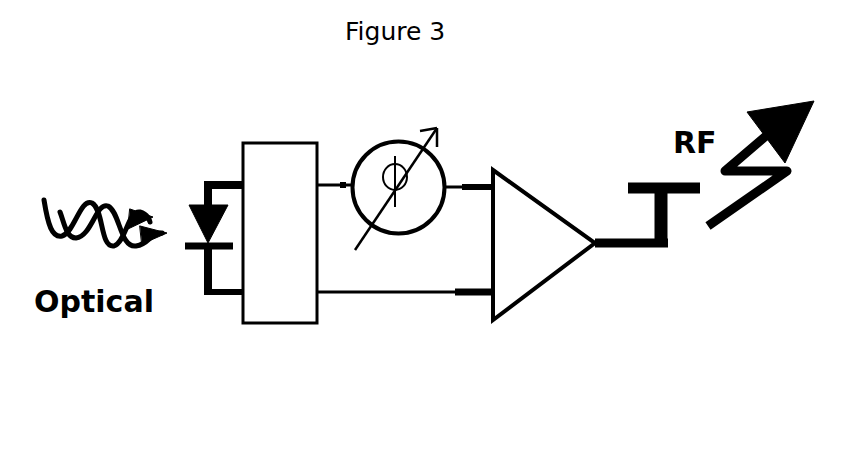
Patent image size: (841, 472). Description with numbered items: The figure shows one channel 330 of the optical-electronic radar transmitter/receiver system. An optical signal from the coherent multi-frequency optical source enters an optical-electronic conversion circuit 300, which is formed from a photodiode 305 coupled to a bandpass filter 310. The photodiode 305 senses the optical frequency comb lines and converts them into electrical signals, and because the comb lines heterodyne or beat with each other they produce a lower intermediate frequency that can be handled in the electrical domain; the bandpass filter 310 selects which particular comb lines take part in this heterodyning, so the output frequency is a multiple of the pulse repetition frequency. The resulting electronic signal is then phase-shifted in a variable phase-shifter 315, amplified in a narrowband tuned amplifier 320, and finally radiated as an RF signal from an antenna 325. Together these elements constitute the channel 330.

The optical-electronic conversion circuit 300 is at (288, 124).
The photodiode 305 is at (197, 182).
The bandpass filter 310 is at (290, 323).
The variable phase-shifter 315 is at (407, 128).
The narrowband tuned amplifier 320 is at (550, 284).
The antenna 325 is at (673, 235).
The channel 330 is at (573, 92).